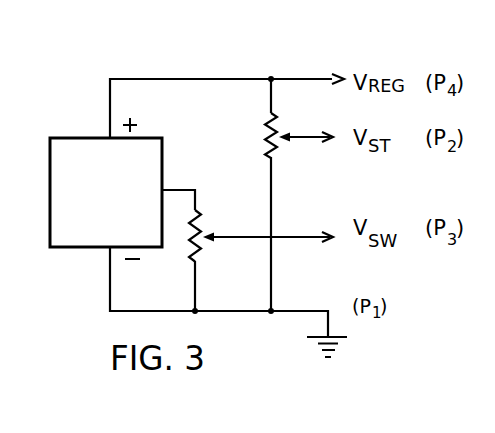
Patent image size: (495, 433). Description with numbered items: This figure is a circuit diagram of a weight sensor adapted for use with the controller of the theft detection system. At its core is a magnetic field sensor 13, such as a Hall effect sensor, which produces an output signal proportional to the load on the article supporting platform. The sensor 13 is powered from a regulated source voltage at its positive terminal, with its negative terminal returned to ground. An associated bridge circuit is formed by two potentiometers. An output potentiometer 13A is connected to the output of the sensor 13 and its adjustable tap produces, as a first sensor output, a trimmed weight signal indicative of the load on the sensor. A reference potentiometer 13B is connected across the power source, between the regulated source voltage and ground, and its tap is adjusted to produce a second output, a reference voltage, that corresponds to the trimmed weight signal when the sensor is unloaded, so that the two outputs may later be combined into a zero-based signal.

The magnetic field sensor 13 is at (78, 138).
The output potentiometer 13A is at (201, 222).
The reference potentiometer 13B is at (276, 153).